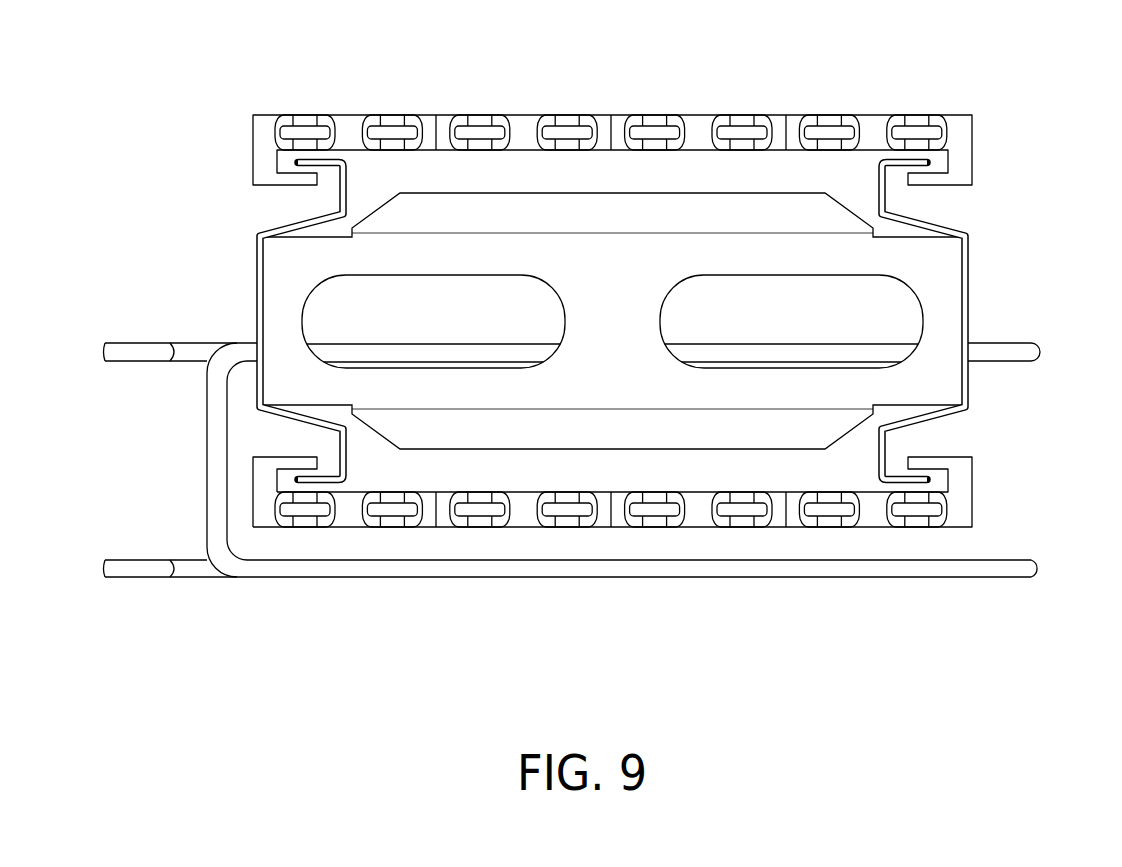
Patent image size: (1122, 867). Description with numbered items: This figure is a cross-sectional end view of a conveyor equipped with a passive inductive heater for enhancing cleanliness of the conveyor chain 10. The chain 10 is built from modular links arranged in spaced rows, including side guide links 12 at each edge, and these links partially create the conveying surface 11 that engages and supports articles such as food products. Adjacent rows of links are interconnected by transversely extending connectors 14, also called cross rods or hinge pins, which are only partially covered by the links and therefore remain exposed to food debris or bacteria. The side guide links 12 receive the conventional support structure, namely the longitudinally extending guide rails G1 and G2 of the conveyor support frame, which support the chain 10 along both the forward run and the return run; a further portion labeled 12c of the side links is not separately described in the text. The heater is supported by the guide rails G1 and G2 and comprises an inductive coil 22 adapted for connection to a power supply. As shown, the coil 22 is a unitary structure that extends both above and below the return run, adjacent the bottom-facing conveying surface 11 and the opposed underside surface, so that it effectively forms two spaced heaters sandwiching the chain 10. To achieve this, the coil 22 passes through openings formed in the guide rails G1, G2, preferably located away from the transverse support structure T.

The chain 10 is at (612, 92).
The conveying surface 11 is at (620, 530).
The side guide links 12 is at (521, 522).
The hook portion of end plate 12c is at (258, 477).
The connectors 14 is at (833, 510).
The transverse support structure T is at (845, 432).
The guide rail G1 is at (257, 262).
The guide rail G2 is at (968, 260).
The inductive coil 22 is at (1040, 352).